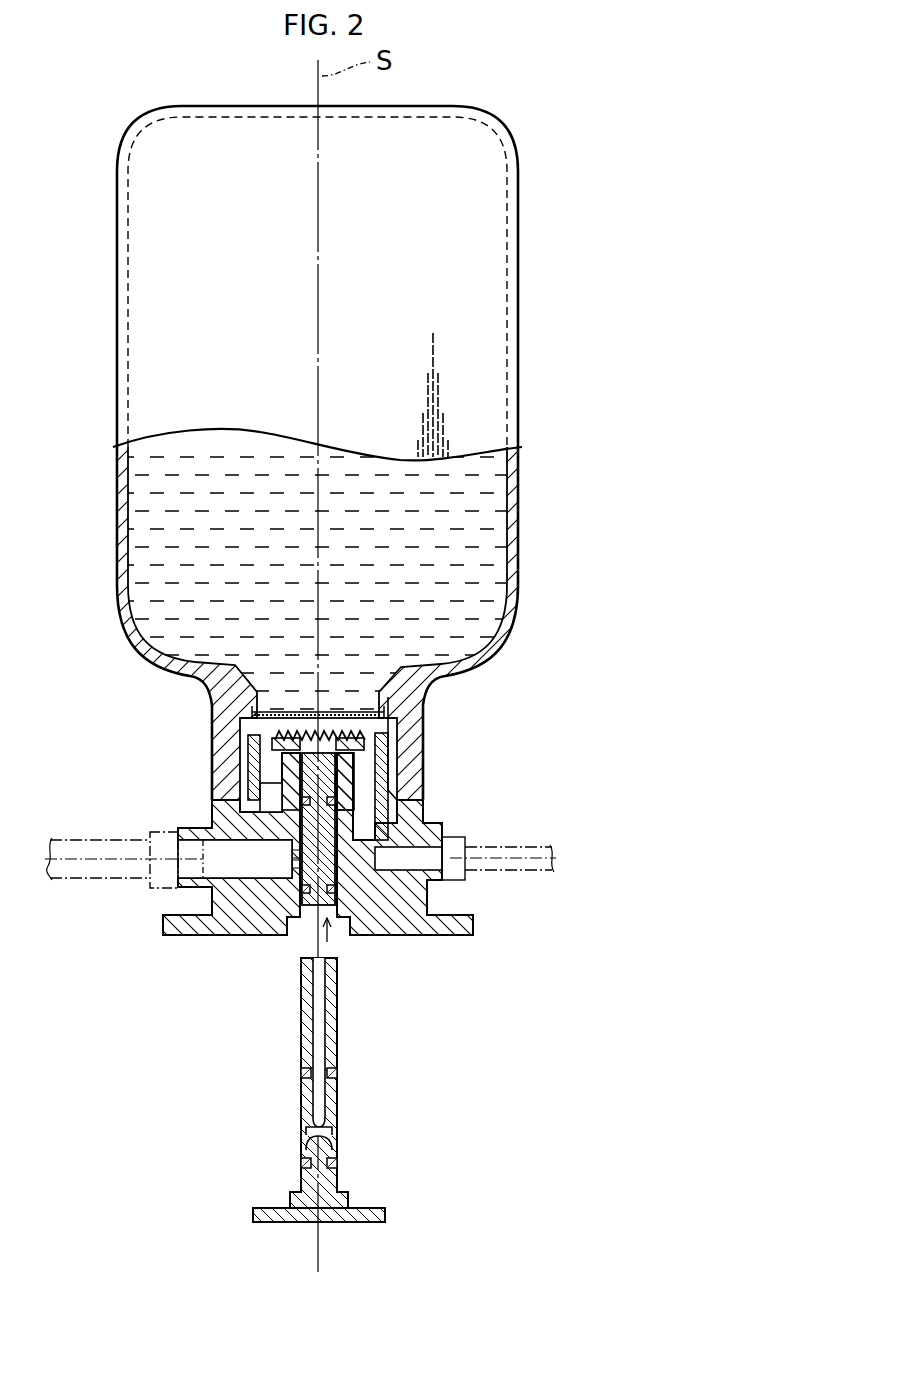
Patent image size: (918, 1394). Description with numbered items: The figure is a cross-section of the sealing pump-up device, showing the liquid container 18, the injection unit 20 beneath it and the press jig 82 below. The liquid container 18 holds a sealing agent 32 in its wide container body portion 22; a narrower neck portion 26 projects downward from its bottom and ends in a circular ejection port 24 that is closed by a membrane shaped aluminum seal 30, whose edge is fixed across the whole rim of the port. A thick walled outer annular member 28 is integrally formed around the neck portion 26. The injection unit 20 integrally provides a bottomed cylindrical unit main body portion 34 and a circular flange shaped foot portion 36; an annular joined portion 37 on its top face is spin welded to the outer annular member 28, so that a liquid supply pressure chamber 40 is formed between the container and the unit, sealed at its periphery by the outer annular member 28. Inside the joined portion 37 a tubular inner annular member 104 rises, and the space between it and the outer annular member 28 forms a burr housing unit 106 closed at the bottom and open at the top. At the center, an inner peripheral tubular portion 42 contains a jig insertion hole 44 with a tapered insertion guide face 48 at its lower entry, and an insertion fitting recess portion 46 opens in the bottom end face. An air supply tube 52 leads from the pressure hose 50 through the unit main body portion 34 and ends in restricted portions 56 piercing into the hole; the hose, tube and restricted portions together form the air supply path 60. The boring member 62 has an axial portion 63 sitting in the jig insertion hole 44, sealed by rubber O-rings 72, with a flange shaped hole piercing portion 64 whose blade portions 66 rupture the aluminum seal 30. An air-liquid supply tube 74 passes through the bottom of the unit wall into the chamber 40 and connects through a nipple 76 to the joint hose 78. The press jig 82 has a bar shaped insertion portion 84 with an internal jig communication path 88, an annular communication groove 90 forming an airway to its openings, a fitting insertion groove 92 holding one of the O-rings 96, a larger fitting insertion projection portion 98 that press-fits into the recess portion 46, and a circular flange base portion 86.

The liquid container 18 is at (528, 102).
The container body portion 22 is at (520, 300).
The sealing agent 32 is at (497, 522).
The inner peripheral tubular portion 42 is at (425, 730).
The jig insertion hole 44 is at (314, 765).
The hole piercing portion 64 is at (272, 745).
The blade portions 66 is at (358, 757).
The joined portion 37 is at (245, 772).
The tubular inner annular member 104 is at (247, 740).
The axial portion 63 is at (216, 806).
The restricted portions 56 is at (293, 852).
The foot portion 36 is at (163, 930).
The air supply tube 52 is at (190, 920).
The air supply path 60 is at (238, 942).
The insertion guide face 48 is at (292, 930).
The pressure hose 50 is at (75, 840).
The ejection port 24 is at (150, 890).
The neck portion 26 is at (214, 702).
The unit main body portion 34 is at (435, 810).
The burr housing unit 106 is at (410, 772).
The outer annular member 28 is at (402, 740).
The liquid supply pressure chamber 40 is at (375, 812).
The O-rings 72 is at (380, 912).
The air-liquid supply tube 74 is at (450, 935).
The nipple 76 is at (478, 838).
The joint hose 78 is at (495, 872).
The insertion fitting recess portion 46 is at (365, 935).
The boring member 62 is at (338, 932).
The injection unit 20 is at (492, 946).
The insertion portion 84 is at (340, 1055).
The jig communication path 88 is at (315, 1090).
The communication groove 90 is at (333, 1138).
The O-rings 96 is at (303, 1073).
The fitting insertion groove 92 is at (337, 1073).
The fitting insertion projection portion 98 is at (348, 1195).
The base portion 86 is at (255, 1215).
The press jig 82 is at (398, 1242).
The aluminum seal 30 is at (322, 725).